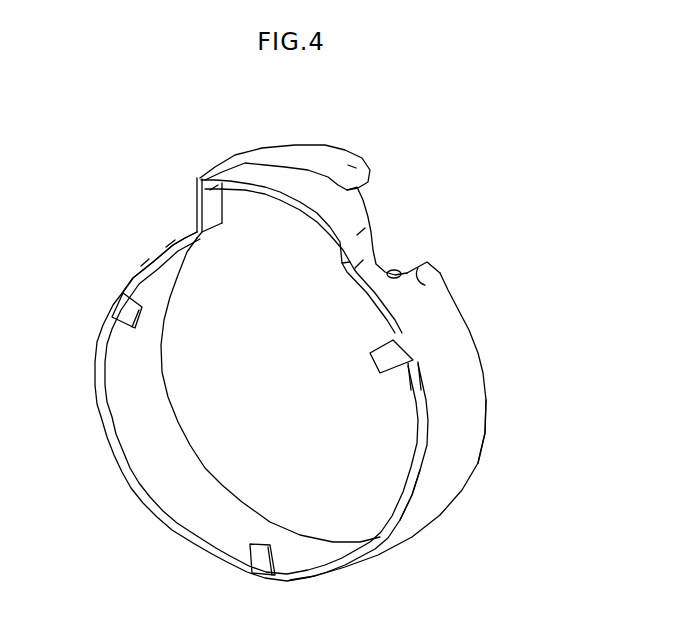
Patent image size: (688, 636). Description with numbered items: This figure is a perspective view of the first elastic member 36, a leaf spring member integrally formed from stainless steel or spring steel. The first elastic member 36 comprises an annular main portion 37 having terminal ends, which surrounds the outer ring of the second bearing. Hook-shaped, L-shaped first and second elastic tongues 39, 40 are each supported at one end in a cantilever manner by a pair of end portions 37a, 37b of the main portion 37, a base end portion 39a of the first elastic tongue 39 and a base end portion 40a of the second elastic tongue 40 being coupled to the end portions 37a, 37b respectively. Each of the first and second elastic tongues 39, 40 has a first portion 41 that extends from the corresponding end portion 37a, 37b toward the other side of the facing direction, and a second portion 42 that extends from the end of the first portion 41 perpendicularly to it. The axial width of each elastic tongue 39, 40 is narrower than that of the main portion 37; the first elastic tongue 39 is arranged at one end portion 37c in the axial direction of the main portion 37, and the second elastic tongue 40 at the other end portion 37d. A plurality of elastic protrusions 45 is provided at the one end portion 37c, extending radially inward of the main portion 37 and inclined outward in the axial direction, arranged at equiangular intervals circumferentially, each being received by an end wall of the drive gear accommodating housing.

The first elastic member 36 is at (211, 162).
The annular main portion 37 is at (450, 339).
The end portion of the main portion 37a is at (437, 272).
The end portion of the main portion 37b is at (143, 258).
The one end portion in the axial direction 37c is at (416, 486).
The other end portion in the axial direction 37d is at (483, 432).
The first elastic tongue 39 is at (366, 217).
The base end portion of the first elastic tongue 39a is at (422, 283).
The second elastic tongue 40 is at (323, 146).
The base end portion of the second elastic tongue 40a is at (178, 236).
The first portion 41 is at (215, 205).
The second portion 42 is at (333, 162).
The elastic protrusion 45 is at (116, 293).